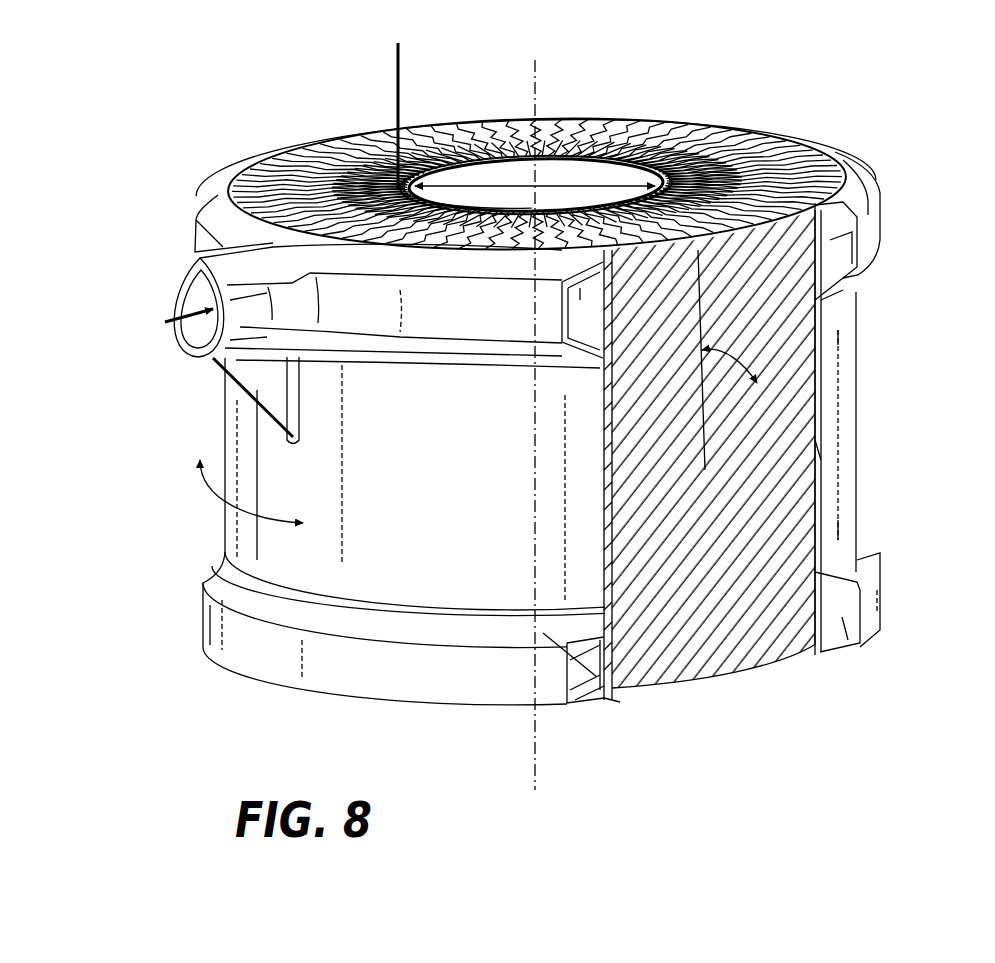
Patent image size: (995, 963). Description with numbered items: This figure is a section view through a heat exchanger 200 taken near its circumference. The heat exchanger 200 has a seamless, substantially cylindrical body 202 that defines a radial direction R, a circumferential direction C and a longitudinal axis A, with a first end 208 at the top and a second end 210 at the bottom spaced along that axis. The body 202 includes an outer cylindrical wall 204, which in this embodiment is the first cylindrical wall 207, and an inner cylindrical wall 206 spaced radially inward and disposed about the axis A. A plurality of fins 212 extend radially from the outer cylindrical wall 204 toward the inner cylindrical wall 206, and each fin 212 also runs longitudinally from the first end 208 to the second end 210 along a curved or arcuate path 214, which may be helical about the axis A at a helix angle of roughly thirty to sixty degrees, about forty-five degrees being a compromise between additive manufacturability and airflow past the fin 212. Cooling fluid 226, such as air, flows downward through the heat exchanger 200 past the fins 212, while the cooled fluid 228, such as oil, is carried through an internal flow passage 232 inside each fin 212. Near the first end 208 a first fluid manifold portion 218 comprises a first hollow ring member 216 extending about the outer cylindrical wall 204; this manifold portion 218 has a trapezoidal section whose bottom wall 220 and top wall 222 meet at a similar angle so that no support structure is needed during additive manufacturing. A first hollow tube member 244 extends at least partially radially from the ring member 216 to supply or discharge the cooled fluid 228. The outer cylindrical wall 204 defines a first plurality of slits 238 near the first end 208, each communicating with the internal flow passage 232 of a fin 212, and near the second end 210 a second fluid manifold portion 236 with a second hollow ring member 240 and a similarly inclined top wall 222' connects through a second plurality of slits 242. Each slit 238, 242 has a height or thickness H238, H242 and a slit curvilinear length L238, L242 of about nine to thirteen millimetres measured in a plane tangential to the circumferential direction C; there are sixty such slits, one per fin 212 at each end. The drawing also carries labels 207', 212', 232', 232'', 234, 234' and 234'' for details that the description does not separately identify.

The heat exchanger 200 is at (560, 130).
The seamless body 202 is at (793, 99).
The outer cylindrical wall 204 is at (384, 502).
The inner cylindrical wall 206 is at (535, 125).
The first cylindrical wall 207 is at (535, 125).
The outer surface 207' is at (384, 502).
The first end 208 is at (268, 157).
The second end 210 is at (360, 700).
The fins 212 is at (867, 203).
The flange inner edge 212' is at (886, 185).
The curved or arcuate path 214 is at (733, 633).
The first hollow ring member 216 is at (539, 386).
The first fluid manifold portion 218 is at (539, 386).
The bottom wall 220 is at (418, 352).
The top wall 222 is at (539, 386).
The top wall of the second fluid manifold portion 222' is at (366, 577).
The cooling fluid 226 is at (399, 80).
The cooled fluid 228 is at (163, 323).
The internal flow passage 232 is at (895, 247).
The tab segment 232' is at (855, 314).
The tab segment 232'' is at (879, 430).
The lower retaining tab 234 is at (849, 645).
The tab segment 234' is at (862, 488).
The tab segment 234'' is at (880, 356).
The second fluid manifold portion 236 is at (243, 657).
The first plurality of slits 238 is at (580, 290).
The second hollow ring member 240 is at (840, 650).
The second plurality of slits 242 is at (597, 677).
The first hollow tube member 244 is at (192, 353).
The longitudinal axis A is at (543, 173).
The radial direction R is at (598, 177).
The circumferential direction C is at (200, 483).
The slit curvilinear length L238 is at (525, 585).
The slit curvilinear length L242 is at (600, 685).
The slit height or thickness H238 is at (644, 742).
The slit height or thickness H242 is at (612, 700).